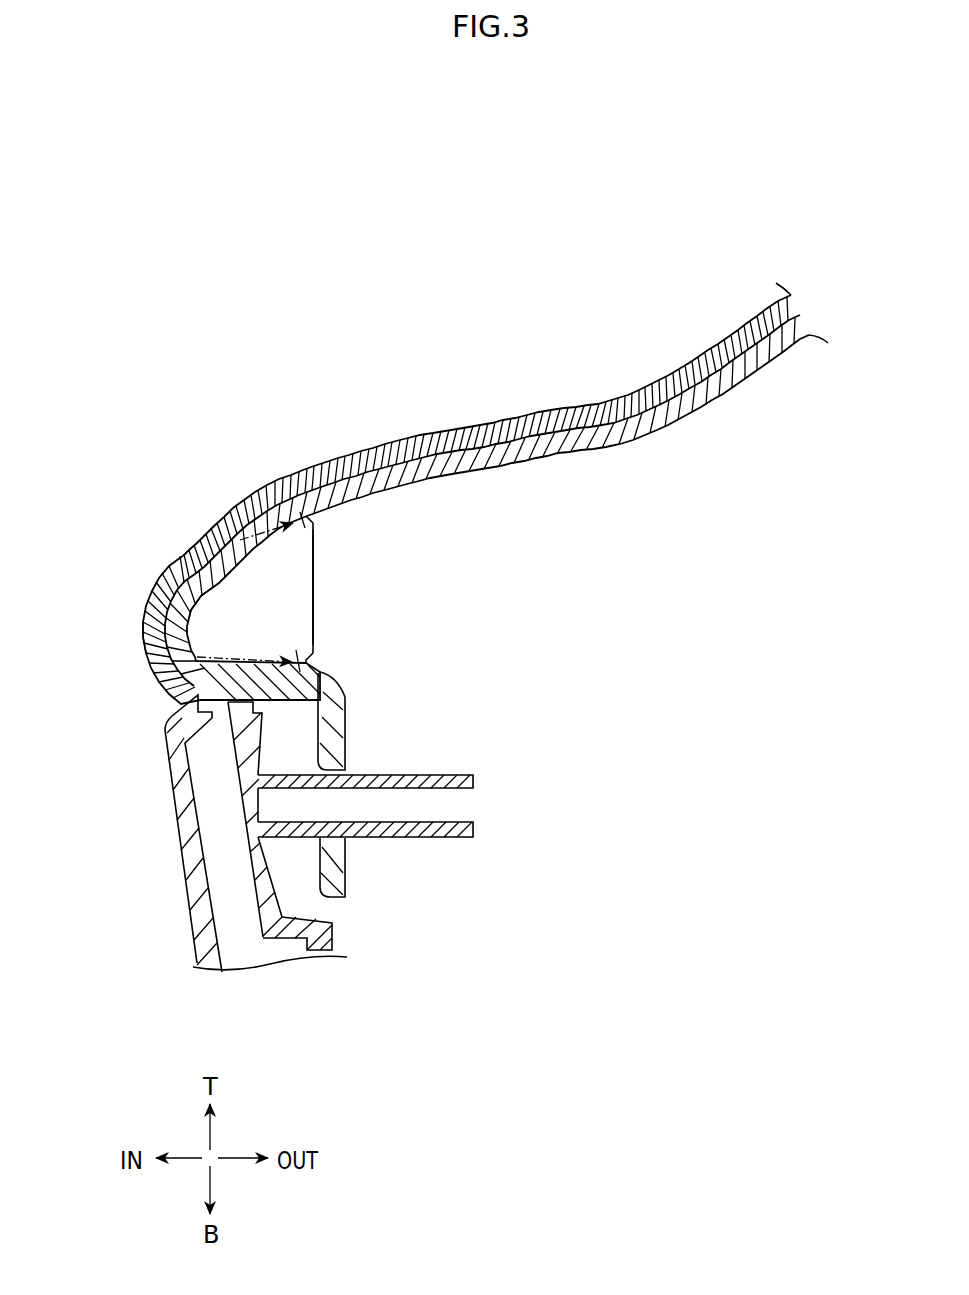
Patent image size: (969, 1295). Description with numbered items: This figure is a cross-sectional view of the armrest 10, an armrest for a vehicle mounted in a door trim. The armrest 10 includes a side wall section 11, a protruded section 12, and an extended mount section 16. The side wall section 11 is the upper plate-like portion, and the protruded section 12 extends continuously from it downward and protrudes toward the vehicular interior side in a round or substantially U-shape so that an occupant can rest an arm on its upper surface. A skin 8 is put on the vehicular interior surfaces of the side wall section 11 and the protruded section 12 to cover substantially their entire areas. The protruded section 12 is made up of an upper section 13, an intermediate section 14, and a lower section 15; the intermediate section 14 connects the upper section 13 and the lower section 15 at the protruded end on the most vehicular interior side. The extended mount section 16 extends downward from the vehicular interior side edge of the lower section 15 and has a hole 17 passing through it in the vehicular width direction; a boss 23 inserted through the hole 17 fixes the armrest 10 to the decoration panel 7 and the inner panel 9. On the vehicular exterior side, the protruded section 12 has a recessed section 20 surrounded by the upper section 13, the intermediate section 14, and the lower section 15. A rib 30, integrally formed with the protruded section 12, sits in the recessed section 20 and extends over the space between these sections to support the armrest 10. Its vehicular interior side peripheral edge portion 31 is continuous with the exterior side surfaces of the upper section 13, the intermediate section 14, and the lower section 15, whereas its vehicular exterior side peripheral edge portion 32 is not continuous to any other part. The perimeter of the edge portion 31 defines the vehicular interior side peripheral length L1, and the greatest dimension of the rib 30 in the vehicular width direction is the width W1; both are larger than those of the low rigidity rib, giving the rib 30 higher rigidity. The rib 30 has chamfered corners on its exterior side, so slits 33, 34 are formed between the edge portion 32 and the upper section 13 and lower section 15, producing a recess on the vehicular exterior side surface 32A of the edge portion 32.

The decoration panel 7 is at (200, 917).
The skin 8 is at (560, 415).
The inner panel 9 is at (322, 937).
The armrest 10 is at (371, 152).
The side wall section 11 is at (745, 347).
The protruded section 12 is at (311, 390).
The upper section 13 is at (485, 462).
The intermediate section 14 is at (145, 632).
The lower section 15 is at (238, 770).
The extended mount section 16 is at (343, 727).
The hole 17 is at (343, 791).
The recessed section 20 is at (165, 612).
The boss 23 is at (417, 837).
The rib 30 is at (252, 583).
The vehicular interior side peripheral edge portion 31 is at (220, 603).
The vehicular exterior side peripheral edge portion 32 is at (303, 607).
The vehicular exterior side surface 32A is at (317, 624).
The slit 33 is at (296, 523).
The slit 34 is at (305, 668).
The vehicular interior side peripheral length L1 is at (245, 540).
The width W1 is at (312, 633).